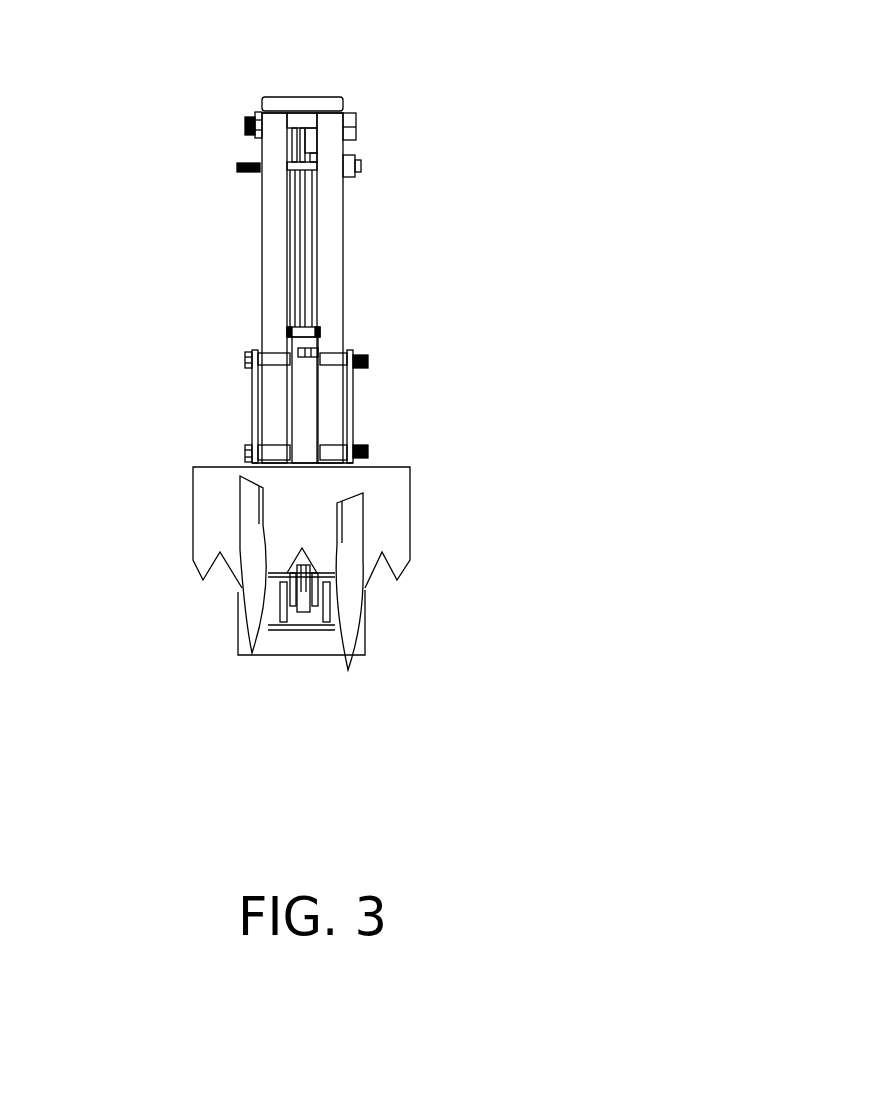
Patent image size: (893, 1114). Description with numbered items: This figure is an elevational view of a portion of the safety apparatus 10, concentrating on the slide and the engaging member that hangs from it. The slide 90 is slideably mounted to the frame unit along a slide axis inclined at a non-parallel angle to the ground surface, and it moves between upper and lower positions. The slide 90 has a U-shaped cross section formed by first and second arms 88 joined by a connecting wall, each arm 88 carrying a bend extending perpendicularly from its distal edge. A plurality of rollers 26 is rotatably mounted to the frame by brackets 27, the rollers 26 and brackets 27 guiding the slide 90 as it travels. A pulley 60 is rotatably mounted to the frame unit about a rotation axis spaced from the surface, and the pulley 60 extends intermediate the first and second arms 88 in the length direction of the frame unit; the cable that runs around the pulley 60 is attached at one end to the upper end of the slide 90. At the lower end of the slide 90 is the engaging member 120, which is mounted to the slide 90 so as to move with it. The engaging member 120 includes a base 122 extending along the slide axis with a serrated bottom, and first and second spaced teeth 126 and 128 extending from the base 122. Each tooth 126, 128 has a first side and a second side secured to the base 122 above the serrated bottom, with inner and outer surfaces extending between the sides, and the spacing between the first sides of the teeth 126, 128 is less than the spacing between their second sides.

The safety apparatus 10 is at (409, 85).
The rollers 26 is at (368, 357).
The brackets 27 is at (305, 413).
The pulley 60 is at (303, 607).
The first and second arms 88 is at (262, 277).
The slide 90 is at (331, 228).
The engaging member 120 is at (449, 482).
The base 122 is at (393, 528).
The first tooth 126 is at (258, 585).
The second tooth 128 is at (343, 612).